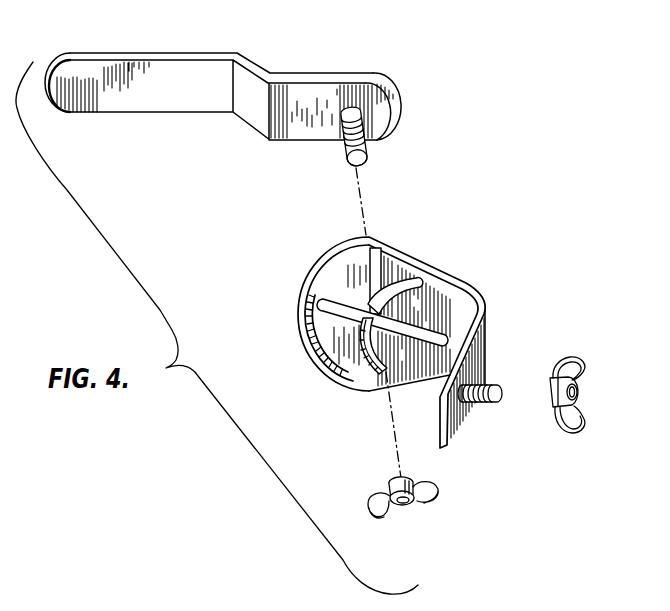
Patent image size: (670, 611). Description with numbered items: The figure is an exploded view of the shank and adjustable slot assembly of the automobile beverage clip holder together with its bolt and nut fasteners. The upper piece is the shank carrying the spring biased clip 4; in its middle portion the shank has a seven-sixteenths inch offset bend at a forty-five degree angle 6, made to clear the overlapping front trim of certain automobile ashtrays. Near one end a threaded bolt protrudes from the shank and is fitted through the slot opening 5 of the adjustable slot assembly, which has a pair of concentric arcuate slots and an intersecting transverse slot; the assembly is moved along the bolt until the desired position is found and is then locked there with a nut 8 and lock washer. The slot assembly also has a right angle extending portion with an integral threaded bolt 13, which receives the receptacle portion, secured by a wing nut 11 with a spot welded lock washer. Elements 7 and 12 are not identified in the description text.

The spring biased clip 4 is at (98, 91).
The slot opening 5 is at (347, 152).
The offset bend at a 45 degree angle 6 is at (456, 303).
The flange 7 is at (486, 346).
The nut and lock washer 8 is at (502, 394).
The wing nut and lock washer 11 is at (322, 358).
The wing nut 12 is at (575, 430).
The threaded bolt 13 is at (550, 378).